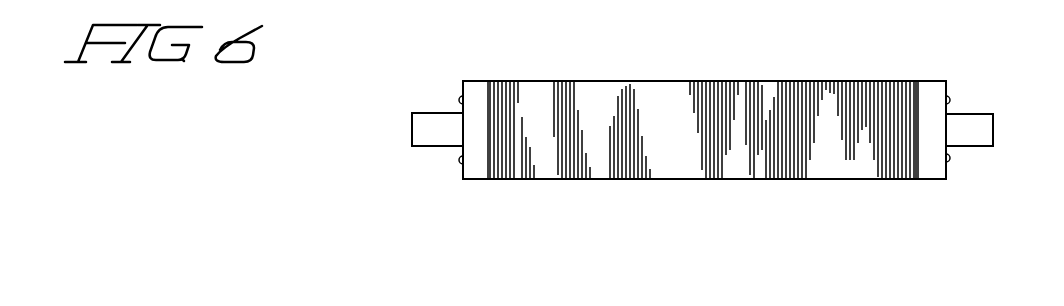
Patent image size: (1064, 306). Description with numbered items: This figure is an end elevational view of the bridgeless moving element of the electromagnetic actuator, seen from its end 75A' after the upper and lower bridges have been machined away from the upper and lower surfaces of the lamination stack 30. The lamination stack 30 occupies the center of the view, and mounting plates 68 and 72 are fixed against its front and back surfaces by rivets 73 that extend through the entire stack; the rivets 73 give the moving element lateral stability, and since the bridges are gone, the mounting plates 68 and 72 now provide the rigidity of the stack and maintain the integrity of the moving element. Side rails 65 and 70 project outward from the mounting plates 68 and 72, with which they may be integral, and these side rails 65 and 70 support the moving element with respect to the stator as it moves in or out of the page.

The lamination stack 30 is at (915, 98).
The end 75A' is at (702, 104).
The side rail 70 is at (420, 133).
The side rail 65 is at (988, 136).
The mounting plate 72 is at (483, 165).
The mounting plate 68 is at (929, 165).
The rivets 73 is at (458, 97).